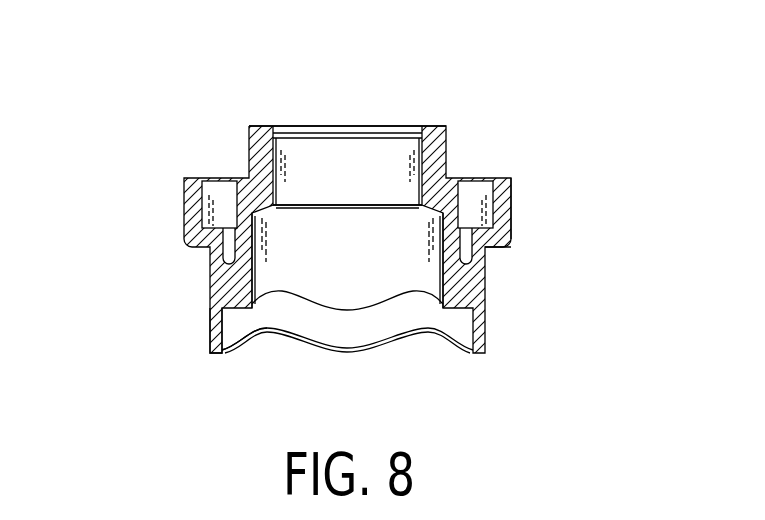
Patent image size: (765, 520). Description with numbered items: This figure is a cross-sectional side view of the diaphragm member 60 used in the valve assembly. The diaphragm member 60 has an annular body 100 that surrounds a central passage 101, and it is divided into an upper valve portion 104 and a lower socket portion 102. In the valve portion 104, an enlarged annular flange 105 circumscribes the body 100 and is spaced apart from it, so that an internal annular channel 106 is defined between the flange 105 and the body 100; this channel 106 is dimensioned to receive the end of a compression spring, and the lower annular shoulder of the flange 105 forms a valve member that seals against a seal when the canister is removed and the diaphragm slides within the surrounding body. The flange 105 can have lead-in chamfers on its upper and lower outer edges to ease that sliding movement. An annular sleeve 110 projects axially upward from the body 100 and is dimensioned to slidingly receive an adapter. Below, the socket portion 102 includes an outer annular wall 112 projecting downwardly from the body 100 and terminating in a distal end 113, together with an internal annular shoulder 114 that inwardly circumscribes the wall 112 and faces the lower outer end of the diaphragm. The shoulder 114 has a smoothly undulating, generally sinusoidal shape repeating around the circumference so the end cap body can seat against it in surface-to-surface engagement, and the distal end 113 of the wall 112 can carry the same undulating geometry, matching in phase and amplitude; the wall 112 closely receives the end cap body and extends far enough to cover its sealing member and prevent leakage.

The diaphragm member 60 is at (447, 85).
The annular body 100 is at (183, 221).
The central passage 101 is at (320, 255).
The socket portion 102 is at (310, 357).
The valve portion 104 is at (563, 158).
The annular flange 105 is at (511, 203).
The internal annular channel 106 is at (483, 183).
The annular sleeve 110 is at (248, 146).
The outer annular wall 112 is at (212, 333).
The distal end 113 is at (263, 340).
The internal annular shoulder 114 is at (396, 292).